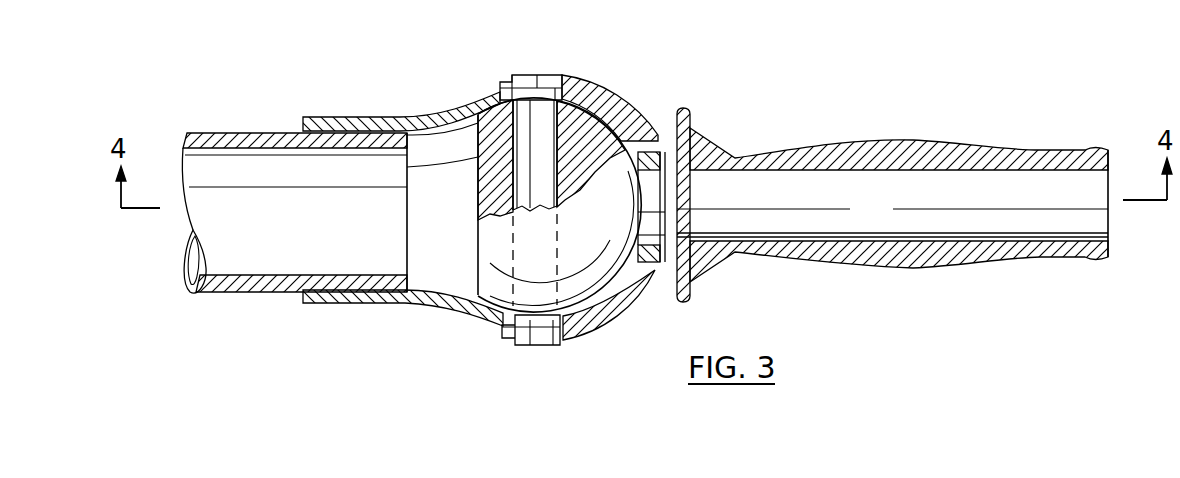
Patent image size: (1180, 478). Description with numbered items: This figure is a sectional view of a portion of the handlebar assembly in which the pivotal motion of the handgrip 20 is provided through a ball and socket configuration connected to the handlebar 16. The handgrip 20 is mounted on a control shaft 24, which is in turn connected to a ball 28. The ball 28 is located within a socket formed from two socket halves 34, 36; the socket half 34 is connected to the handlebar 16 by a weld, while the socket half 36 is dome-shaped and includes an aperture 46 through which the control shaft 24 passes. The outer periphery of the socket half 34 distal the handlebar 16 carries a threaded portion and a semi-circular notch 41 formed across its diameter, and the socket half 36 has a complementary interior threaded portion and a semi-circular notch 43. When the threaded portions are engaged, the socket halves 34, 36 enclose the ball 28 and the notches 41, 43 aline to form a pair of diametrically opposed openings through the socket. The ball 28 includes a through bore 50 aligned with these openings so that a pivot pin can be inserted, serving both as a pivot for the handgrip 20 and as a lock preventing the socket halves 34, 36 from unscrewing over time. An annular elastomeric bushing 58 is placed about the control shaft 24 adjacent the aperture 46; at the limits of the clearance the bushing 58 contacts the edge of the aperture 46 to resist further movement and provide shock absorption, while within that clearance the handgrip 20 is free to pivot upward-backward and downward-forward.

The handlebar 16 is at (244, 131).
The socket half 34 is at (340, 123).
The ball 28 is at (600, 216).
The through bore 50 is at (513, 180).
The semi-circular notch 41 is at (538, 88).
The semi-circular notch 43 is at (520, 76).
The socket half 36 is at (613, 98).
The aperture 46 is at (652, 270).
The annular elastomeric bushing 58 is at (667, 152).
The handgrip 20 is at (856, 143).
The control shaft 24 is at (858, 218).